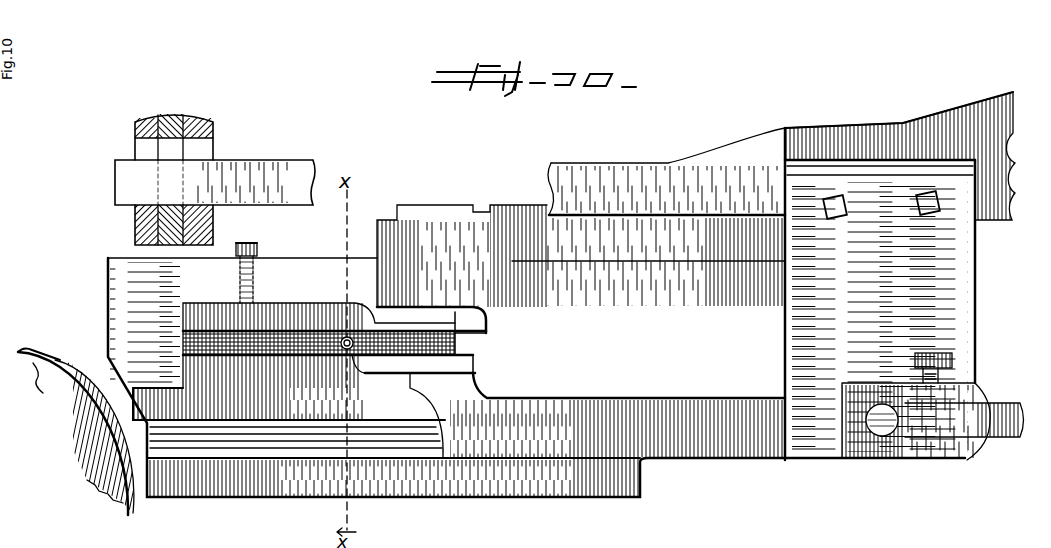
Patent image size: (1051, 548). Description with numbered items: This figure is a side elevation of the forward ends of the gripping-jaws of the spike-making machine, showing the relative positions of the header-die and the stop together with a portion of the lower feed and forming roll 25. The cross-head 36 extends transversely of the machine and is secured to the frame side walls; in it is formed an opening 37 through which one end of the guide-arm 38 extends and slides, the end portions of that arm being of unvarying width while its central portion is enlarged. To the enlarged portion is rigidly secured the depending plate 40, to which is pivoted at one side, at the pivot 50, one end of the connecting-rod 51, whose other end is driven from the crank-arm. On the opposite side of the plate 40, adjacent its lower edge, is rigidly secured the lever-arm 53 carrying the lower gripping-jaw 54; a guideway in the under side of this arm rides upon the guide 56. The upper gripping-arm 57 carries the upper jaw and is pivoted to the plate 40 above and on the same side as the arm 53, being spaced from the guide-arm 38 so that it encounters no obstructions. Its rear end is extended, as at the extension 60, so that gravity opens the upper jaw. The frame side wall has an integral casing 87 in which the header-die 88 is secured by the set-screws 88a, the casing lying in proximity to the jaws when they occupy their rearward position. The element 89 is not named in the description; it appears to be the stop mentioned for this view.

The curved flange member 25 is at (76, 431).
The cross-head 36 is at (175, 117).
The opening 37 is at (217, 160).
The guide-arm 38 is at (122, 180).
The depending plate 40 is at (880, 294).
The pivot 50 is at (884, 425).
The connecting-rod 51 is at (1018, 393).
The lever-arm 53 is at (572, 435).
The lower gripping-jaw 54 is at (575, 415).
The guide 56 is at (305, 440).
The upper gripping-arm 57 is at (512, 260).
The extension 60 is at (968, 104).
The casing 87 is at (220, 286).
The header-die 88 is at (297, 320).
The set-screws 88a is at (245, 228).
The guide block 89 is at (213, 335).